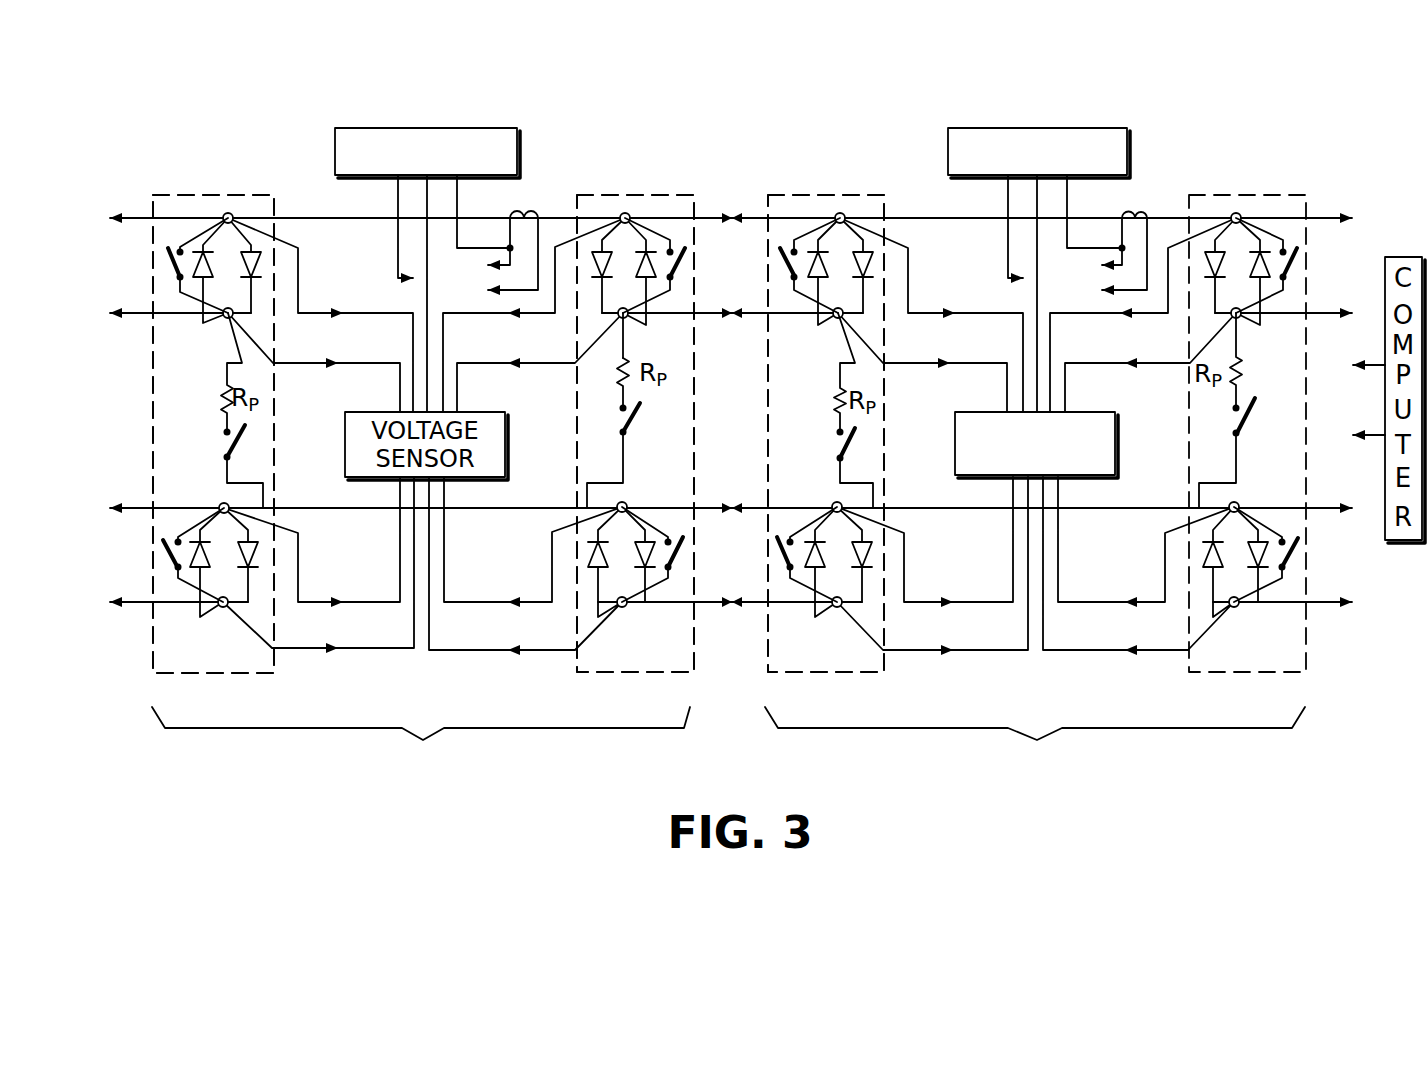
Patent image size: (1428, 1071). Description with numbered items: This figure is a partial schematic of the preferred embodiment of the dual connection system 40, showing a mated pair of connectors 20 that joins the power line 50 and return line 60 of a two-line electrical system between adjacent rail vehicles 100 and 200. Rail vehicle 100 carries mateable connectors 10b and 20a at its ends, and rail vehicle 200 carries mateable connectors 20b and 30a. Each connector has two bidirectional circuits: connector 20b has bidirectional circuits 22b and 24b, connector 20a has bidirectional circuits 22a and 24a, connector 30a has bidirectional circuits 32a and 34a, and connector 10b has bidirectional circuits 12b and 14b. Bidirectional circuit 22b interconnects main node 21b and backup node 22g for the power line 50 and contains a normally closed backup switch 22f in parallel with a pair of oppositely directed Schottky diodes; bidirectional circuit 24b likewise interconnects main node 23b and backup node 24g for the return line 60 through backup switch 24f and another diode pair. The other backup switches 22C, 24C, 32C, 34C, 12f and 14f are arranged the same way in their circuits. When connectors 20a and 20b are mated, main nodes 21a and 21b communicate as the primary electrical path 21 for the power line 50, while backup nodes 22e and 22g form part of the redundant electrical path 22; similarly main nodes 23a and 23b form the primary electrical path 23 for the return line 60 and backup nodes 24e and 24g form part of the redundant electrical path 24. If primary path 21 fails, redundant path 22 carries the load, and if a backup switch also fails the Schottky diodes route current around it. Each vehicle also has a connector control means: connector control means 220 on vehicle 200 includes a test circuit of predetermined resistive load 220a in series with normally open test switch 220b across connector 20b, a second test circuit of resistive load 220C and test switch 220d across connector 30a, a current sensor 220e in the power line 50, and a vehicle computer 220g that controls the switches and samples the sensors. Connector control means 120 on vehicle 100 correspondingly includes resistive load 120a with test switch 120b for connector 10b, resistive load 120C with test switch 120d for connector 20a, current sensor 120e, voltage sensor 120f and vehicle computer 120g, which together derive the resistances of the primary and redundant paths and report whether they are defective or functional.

The rail vehicle 200 is at (421, 746).
The rail vehicle 100 is at (1035, 746).
The connector control means 220 is at (305, 190).
The connector control means 120 is at (923, 192).
The dual connection system 40 is at (615, 148).
The switching cell pair 20 is at (767, 192).
The mateable connector 30a is at (190, 195).
The mateable connector 20b is at (595, 192).
The mateable connector 20a is at (870, 192).
The mateable connector 10b is at (1237, 195).
The main node 21b is at (625, 215).
The main node 21a is at (842, 215).
The primary electrical path 21 is at (741, 213).
The redundant electrical path 22 is at (778, 308).
The primary electrical path 23 is at (752, 505).
The redundant electrical path 24 is at (752, 605).
The bidirectional circuit 22b is at (678, 237).
The bidirectional circuit 22a is at (787, 237).
The backup switch 22C is at (782, 250).
The backup switch 22f is at (682, 262).
The backup node 22g is at (656, 335).
The backup node 22e is at (845, 315).
The main node 23b is at (624, 505).
The main node 23a is at (810, 471).
The bidirectional circuit 24a is at (783, 540).
The bidirectional circuit 24b is at (678, 526).
The backup switch 24f is at (685, 548).
The backup switch 24C is at (790, 567).
The backup node 24g is at (623, 605).
The backup node 24e is at (837, 605).
The bidirectional circuit 32a is at (172, 243).
The backup switch 32C is at (170, 263).
The bidirectional circuit 34a is at (172, 533).
The backup switch 34C is at (165, 555).
The bidirectional circuit 12b is at (1295, 240).
The backup switch 12f is at (1300, 268).
The bidirectional circuit 14b is at (1287, 520).
The backup switch 14f is at (1300, 560).
The vehicle computer 220g is at (415, 128).
The vehicle computer 120g is at (1028, 128).
The current sensor 220e is at (525, 210).
The current sensor 120e is at (1135, 210).
The predetermined resistive load 220C is at (225, 390).
The predetermined resistive load 220a is at (620, 372).
The test switch 220b is at (620, 417).
The test switch 220d is at (245, 443).
The predetermined resistive load 120C is at (838, 388).
The predetermined resistive load 120a is at (1244, 378).
The test switch 120b is at (1250, 420).
The test switch 120d is at (848, 440).
The voltage sensor 120f is at (1118, 428).
The power line 50 is at (1163, 218).
The return line 60 is at (1157, 505).